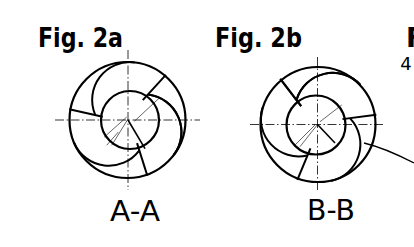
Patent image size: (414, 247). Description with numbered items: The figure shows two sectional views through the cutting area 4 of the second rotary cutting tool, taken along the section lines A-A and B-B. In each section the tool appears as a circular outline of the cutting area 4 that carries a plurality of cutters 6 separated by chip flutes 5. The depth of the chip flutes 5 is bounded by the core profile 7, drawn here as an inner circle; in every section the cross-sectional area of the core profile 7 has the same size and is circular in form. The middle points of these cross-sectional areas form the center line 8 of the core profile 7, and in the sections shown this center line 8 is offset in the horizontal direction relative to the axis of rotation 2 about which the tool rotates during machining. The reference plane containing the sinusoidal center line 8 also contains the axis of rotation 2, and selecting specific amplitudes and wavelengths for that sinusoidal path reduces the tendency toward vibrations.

In FIG. 2A, the axis of rotation 2 is at (108, 147).
In FIG. 2B, the axis of rotation 2 is at (340, 162).
In FIG. 2A, the cutting area 4 is at (65, 86).
In FIG. 2B, the cutting area 4 is at (262, 100).
In FIG. 2A, the chip flutes 5 is at (167, 88).
In FIG. 2B, the chip flutes 5 is at (317, 77).
In FIG. 2A, the cutters 6 is at (140, 72).
In FIG. 2B, the cutters 6 is at (347, 88).
In FIG. 2A, the core profile 7 is at (183, 138).
In FIG. 2A, the center line 8 is at (158, 137).
In FIG. 2B, the center line 8 is at (287, 153).